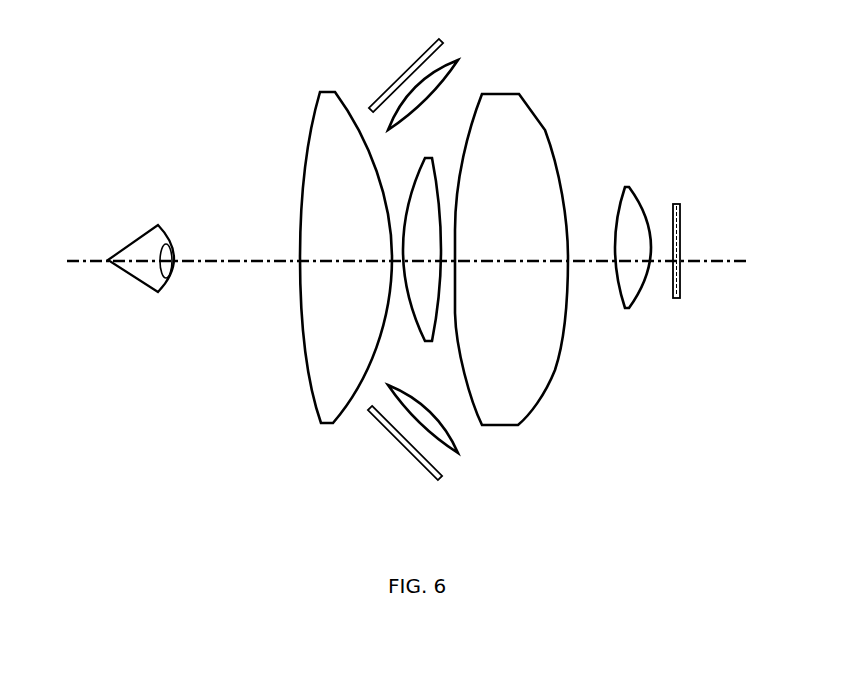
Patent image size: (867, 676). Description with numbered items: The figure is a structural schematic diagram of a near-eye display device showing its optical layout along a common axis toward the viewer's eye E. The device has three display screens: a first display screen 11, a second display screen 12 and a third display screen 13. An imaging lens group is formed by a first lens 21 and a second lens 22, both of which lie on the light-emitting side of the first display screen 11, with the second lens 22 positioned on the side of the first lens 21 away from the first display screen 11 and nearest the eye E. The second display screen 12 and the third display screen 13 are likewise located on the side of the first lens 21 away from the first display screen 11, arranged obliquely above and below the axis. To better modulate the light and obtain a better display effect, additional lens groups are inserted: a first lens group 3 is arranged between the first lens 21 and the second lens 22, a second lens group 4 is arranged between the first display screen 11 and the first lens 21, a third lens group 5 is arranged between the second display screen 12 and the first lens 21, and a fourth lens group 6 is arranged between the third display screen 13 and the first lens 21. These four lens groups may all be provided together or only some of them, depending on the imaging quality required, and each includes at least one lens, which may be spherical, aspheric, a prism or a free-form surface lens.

The eye of observer E is at (143, 263).
The first lens group 3 is at (403, 288).
The second lens group 4 is at (626, 187).
The third lens group 5 is at (458, 60).
The fourth lens group 6 is at (458, 453).
The first display screen 11 is at (680, 218).
The second display screen 12 is at (405, 70).
The third display screen 13 is at (398, 443).
The first lens 21 is at (555, 370).
The second lens 22 is at (303, 330).